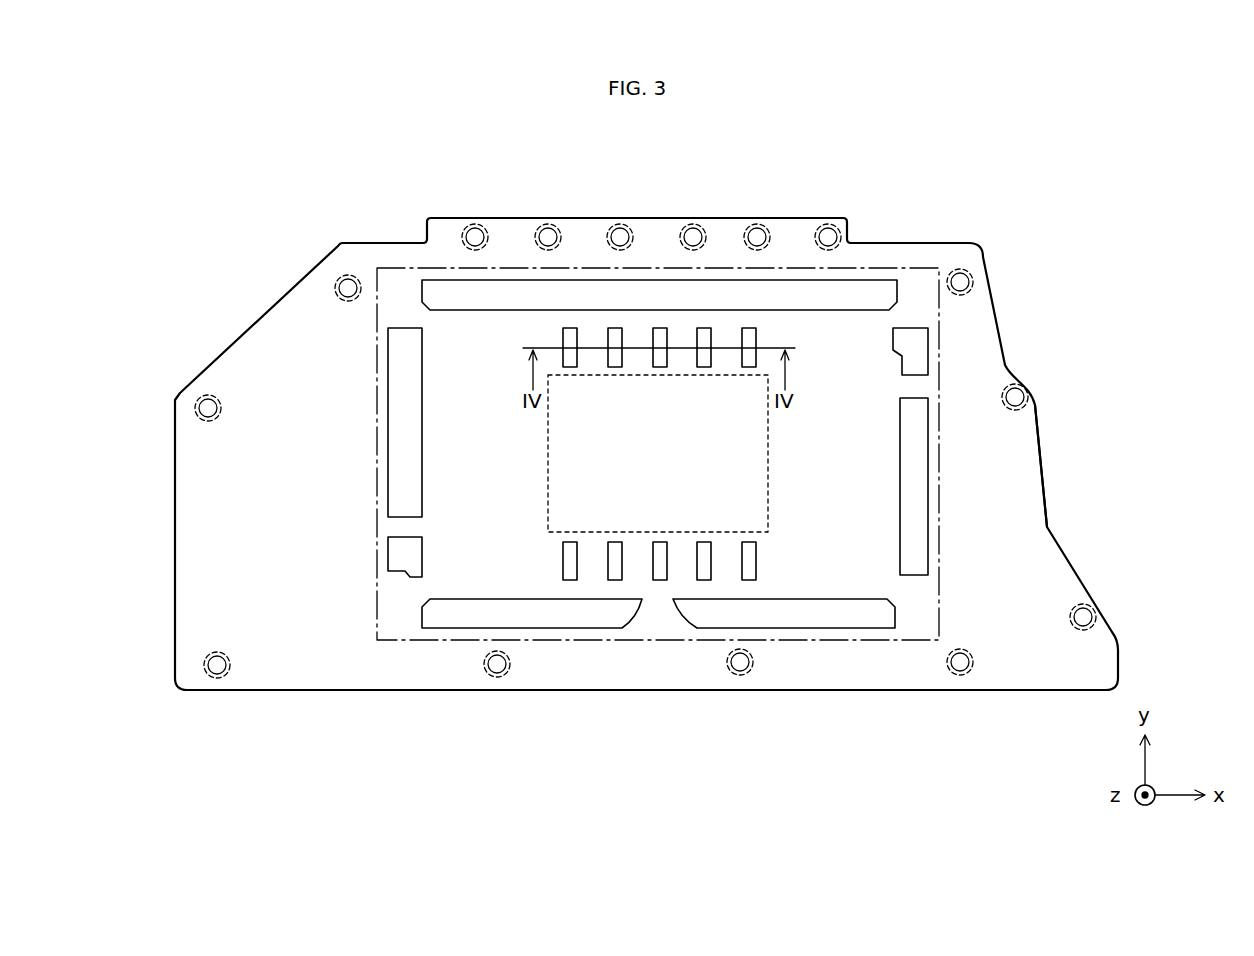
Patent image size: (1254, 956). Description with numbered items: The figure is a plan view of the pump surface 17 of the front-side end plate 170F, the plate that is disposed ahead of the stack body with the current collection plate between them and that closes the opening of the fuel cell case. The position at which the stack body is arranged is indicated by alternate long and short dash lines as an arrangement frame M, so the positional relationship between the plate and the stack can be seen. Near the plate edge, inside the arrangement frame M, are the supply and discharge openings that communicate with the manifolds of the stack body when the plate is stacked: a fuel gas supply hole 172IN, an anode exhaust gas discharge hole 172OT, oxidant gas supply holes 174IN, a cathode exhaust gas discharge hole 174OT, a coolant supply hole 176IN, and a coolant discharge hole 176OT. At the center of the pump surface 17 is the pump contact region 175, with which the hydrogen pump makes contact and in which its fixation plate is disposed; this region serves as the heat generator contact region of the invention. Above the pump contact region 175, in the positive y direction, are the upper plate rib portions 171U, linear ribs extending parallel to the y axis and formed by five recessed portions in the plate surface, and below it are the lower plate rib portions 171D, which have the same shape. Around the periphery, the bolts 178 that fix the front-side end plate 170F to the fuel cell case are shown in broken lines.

The pump surface 17 is at (920, 252).
The front-side end plate 170F is at (1053, 160).
The bolts 178 is at (345, 275).
The cathode exhaust gas discharge hole 174OT is at (863, 298).
The oxidant gas supply holes 174IN is at (710, 622).
The coolant discharge hole 176OT is at (395, 428).
The coolant supply hole 176IN is at (918, 482).
The anode exhaust gas discharge hole 172OT is at (396, 565).
The fuel gas supply hole 172IN is at (920, 348).
The pump contact region 175 is at (768, 448).
The upper plate rib portions 171U is at (749, 367).
The lower plate rib portions 171D is at (749, 542).
The arrangement frame M is at (828, 640).